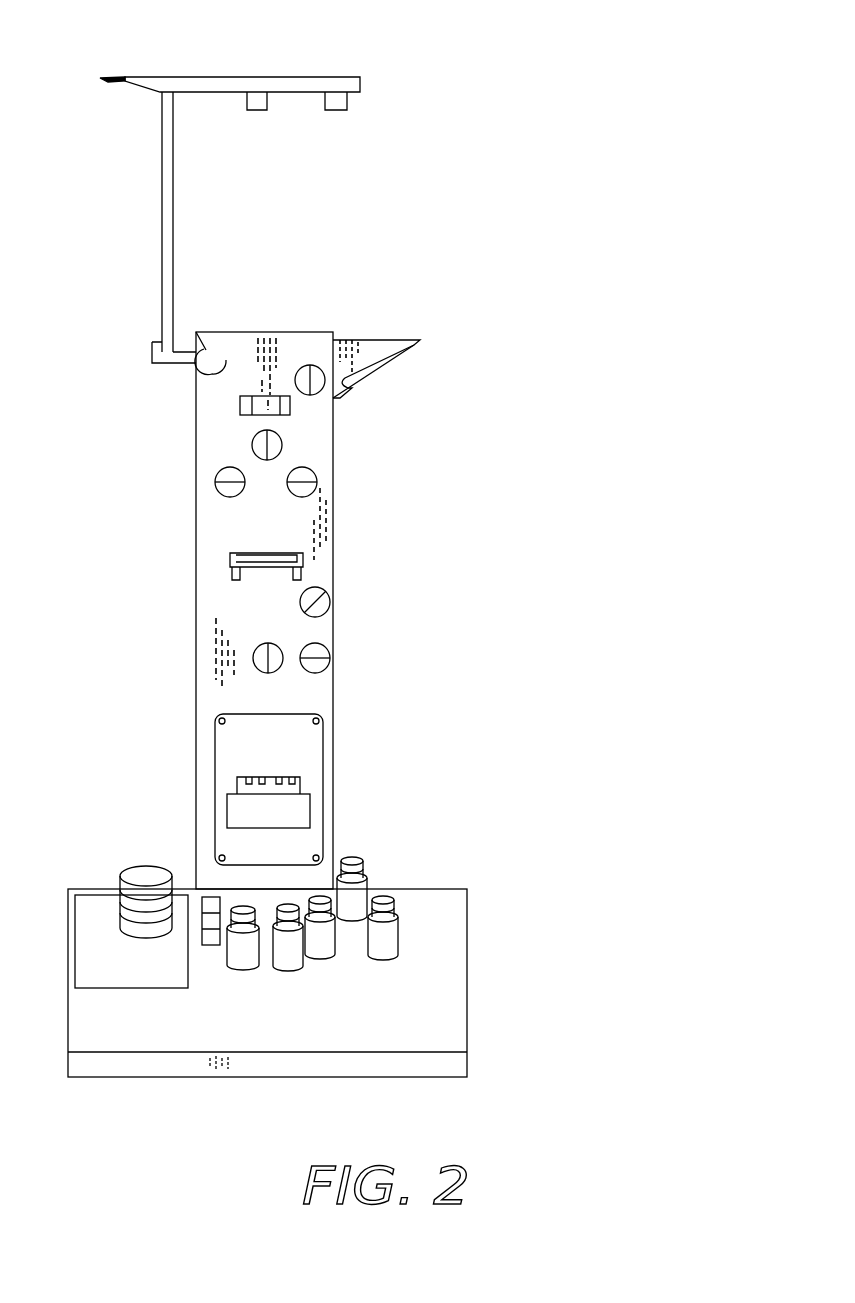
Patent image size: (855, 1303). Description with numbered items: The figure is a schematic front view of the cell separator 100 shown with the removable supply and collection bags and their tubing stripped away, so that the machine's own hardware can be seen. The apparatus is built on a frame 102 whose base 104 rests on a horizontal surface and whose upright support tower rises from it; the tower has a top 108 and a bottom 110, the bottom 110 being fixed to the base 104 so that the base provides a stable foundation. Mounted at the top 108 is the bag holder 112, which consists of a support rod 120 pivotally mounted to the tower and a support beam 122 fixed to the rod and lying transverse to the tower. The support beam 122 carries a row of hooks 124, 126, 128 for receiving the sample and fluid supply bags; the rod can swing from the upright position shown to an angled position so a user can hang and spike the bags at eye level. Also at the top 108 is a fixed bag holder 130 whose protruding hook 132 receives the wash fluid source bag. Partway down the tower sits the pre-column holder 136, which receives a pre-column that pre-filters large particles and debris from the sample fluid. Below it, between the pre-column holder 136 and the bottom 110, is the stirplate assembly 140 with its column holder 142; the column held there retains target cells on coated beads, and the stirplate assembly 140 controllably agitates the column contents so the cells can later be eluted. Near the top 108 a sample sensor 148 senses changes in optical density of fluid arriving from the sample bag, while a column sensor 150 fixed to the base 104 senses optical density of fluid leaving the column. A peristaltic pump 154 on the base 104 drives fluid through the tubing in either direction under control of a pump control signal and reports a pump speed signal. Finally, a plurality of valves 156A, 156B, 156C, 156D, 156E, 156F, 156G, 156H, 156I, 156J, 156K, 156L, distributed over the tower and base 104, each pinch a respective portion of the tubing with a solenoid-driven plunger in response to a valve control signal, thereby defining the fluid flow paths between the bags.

The cell separator 100 is at (522, 250).
The frame 102 is at (105, 612).
The base 104 is at (143, 1078).
The top 108 is at (196, 372).
The bottom 110 is at (198, 851).
The bag holder 112 is at (428, 106).
The support rod 120 is at (174, 222).
The support beam 122 is at (213, 77).
The hook 124 is at (105, 81).
The hook 126 is at (257, 111).
The hook 128 is at (345, 110).
The fixed bag holder 130 is at (363, 340).
The protruding hook 132 is at (420, 340).
The pre-column holder 136 is at (278, 553).
The stirplate assembly 140 is at (323, 785).
The column holder 142 is at (300, 808).
The sample sensor 148 is at (238, 405).
The column sensor 150 is at (202, 944).
The peristaltic pump 154 is at (118, 872).
The valve 156A is at (310, 364).
The valve 156B is at (283, 445).
The valve 156C is at (215, 482).
The valve 156D is at (318, 482).
The valve 156E is at (330, 600).
The valve 156F is at (330, 655).
The valve 156G is at (280, 672).
The valve 156H is at (367, 890).
The valve 156I is at (399, 956).
The valve 156J is at (322, 960).
The valve 156K is at (285, 972).
The valve 156L is at (238, 970).